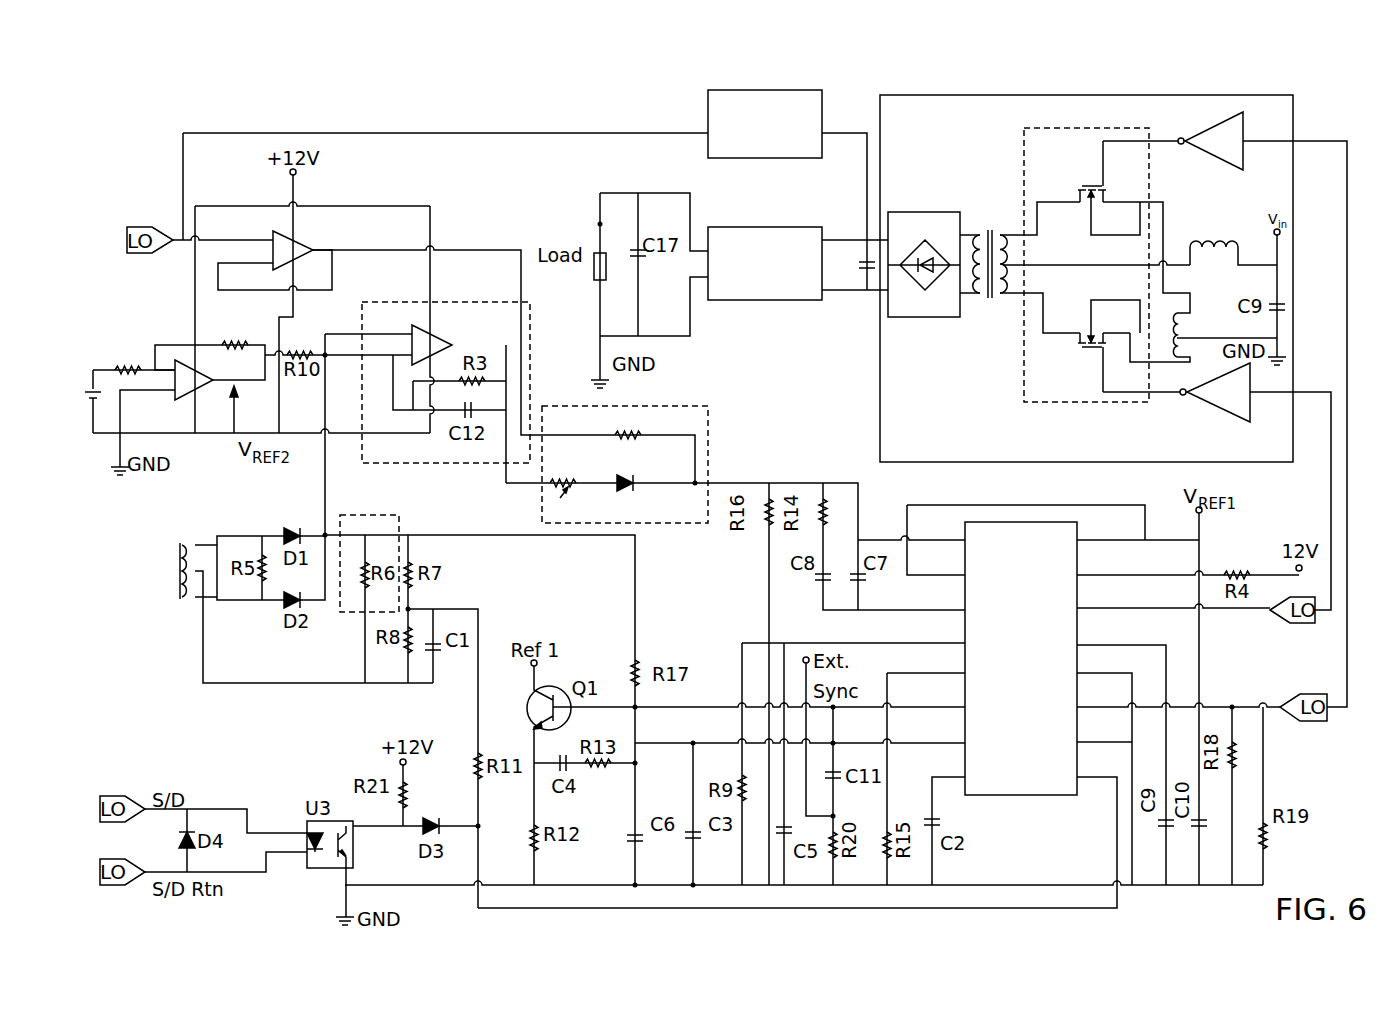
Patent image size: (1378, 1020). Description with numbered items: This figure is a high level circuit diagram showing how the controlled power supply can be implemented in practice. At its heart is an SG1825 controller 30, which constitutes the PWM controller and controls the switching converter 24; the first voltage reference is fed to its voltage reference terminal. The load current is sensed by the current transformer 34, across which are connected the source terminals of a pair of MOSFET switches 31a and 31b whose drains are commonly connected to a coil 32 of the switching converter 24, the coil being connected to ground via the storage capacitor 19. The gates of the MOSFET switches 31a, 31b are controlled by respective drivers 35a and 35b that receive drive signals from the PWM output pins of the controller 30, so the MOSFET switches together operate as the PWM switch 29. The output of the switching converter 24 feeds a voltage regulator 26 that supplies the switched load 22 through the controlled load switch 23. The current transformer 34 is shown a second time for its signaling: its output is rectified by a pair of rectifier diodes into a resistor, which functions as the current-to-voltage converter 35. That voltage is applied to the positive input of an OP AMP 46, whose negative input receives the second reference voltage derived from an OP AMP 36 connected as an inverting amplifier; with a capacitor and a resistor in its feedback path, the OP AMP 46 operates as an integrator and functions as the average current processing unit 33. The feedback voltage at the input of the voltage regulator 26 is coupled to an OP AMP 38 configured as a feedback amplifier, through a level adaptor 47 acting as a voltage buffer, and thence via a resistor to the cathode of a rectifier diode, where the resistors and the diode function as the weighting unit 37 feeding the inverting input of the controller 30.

The storage capacitor 19 is at (854, 265).
The switched load 22 is at (592, 270).
The controlled load switch 23 is at (597, 224).
The switching converter 24 is at (880, 356).
The voltage regulator 26 is at (778, 300).
The PWM switch 29 is at (1024, 352).
The PWM controller 30 is at (1030, 795).
The MOSFET switch 31a is at (1093, 188).
The MOSFET switch 31b is at (1099, 346).
The coil 32 is at (1233, 239).
The average current processing unit 33 is at (445, 464).
The current transformer 34 is at (671, 442).
The current-to-voltage converter 35 is at (346, 612).
The driver 35a is at (1225, 409).
The driver 35b is at (1217, 486).
The OP AMP 36 is at (212, 388).
The weighting unit 37 is at (686, 523).
The OP AMP 38 is at (276, 256).
The OP AMP 46 is at (436, 341).
The level adaptor 47 is at (708, 143).